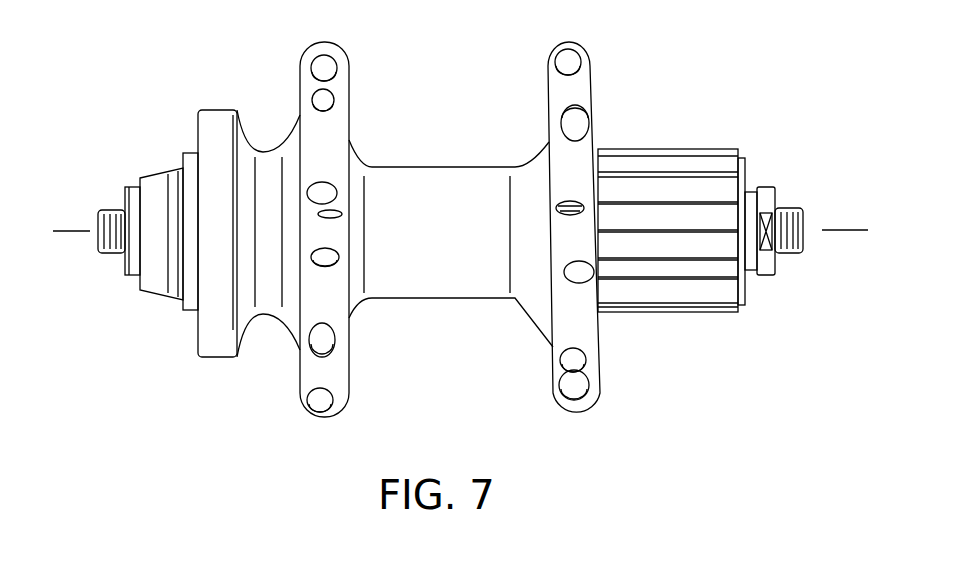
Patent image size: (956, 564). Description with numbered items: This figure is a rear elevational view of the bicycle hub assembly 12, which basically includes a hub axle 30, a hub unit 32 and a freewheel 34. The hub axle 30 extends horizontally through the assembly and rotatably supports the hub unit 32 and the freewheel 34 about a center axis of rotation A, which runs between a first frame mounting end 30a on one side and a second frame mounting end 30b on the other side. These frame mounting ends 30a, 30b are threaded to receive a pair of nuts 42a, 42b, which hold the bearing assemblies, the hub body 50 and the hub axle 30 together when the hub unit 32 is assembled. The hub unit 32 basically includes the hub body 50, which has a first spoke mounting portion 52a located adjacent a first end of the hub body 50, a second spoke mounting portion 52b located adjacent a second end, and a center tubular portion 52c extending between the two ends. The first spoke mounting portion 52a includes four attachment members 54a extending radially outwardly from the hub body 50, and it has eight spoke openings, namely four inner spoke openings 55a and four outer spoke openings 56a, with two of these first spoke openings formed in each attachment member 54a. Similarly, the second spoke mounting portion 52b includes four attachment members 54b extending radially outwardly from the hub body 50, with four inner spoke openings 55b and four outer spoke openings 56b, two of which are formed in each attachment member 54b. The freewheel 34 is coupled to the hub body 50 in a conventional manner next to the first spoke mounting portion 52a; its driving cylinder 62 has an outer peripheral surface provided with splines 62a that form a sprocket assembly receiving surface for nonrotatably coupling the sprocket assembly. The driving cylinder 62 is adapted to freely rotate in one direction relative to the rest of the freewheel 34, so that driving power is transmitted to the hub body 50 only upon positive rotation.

The bicycle hub assembly 12 is at (664, 72).
The hub axle 30 is at (798, 205).
The first frame mounting end 30a is at (798, 257).
The second frame mounting end 30b is at (108, 255).
The hub unit 32 is at (440, 113).
The freewheel 34 is at (715, 139).
The nut 42a is at (767, 277).
The nut 42b is at (127, 277).
The hub body 50 is at (420, 310).
The first spoke mounting portion 52a is at (536, 97).
The second spoke mounting portion 52b is at (362, 115).
The center tubular portion 52c is at (443, 154).
The attachment members 54a is at (577, 42).
The attachment members 54b is at (332, 42).
The inner spoke openings 55a is at (590, 120).
The inner spoke openings 55b is at (313, 105).
The outer spoke openings 56a is at (581, 64).
The outer spoke openings 56b is at (337, 66).
The driving cylinder 62 is at (746, 316).
The splines 62a is at (663, 292).
The center axis of rotation A is at (845, 229).